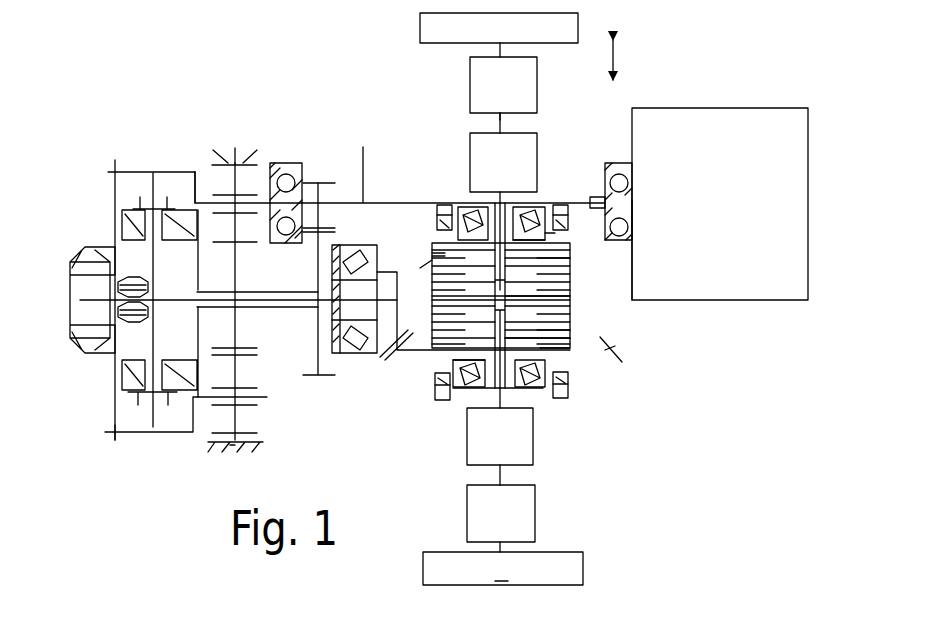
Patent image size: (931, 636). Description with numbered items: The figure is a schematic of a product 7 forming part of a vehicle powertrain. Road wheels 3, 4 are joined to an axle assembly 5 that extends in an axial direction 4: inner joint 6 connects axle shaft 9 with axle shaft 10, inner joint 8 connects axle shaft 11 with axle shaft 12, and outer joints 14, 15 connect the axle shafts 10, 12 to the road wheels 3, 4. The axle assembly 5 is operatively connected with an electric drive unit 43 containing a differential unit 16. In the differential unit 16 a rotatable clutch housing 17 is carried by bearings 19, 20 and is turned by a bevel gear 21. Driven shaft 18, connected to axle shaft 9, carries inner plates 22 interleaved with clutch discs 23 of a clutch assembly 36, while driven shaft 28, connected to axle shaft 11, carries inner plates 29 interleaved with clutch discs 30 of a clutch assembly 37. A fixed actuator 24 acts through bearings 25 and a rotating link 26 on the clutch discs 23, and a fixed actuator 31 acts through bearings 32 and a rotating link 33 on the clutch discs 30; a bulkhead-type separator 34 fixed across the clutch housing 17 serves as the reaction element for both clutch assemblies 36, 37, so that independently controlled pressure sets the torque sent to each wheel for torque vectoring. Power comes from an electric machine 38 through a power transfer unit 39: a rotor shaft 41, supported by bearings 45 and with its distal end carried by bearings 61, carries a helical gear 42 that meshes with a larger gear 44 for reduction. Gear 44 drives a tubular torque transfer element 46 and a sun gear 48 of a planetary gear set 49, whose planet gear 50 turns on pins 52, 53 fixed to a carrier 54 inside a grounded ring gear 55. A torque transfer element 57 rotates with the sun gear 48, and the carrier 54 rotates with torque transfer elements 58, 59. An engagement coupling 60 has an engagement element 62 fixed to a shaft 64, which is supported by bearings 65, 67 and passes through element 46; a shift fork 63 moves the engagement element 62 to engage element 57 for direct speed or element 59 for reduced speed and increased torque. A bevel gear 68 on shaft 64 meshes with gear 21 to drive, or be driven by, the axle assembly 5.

The road wheel 3 is at (506, 39).
The road wheel 4 is at (618, 58).
The axle assembly 5 is at (530, 126).
The inner joint 6 is at (507, 173).
The product 7 is at (612, 428).
The inner joint 8 is at (506, 447).
The axle shaft 9 is at (497, 200).
The axle shaft 10 is at (500, 125).
The axle shaft 11 is at (503, 400).
The axle shaft 12 is at (502, 473).
The outer joint 14 is at (516, 95).
The outer joint 15 is at (514, 525).
The differential unit 16 is at (625, 318).
The clutch housing 17 is at (575, 306).
The driven shaft 18 is at (572, 292).
The bearing 19 is at (540, 207).
The bearing 20 is at (532, 397).
The gear 21 is at (600, 340).
The inner plates 22 is at (420, 270).
The clutch discs 23 is at (445, 255).
The actuator 24 is at (443, 205).
The bearings 25 is at (565, 232).
The rotating link 26 is at (627, 274).
The driven shaft 28 is at (435, 355).
The inner plates 29 is at (385, 352).
The clutch discs 30 is at (415, 345).
The actuator 31 is at (445, 402).
The bearings 32 is at (570, 385).
The rotating link 33 is at (570, 360).
The separator 34 is at (575, 328).
The clutch assembly 36 is at (634, 270).
The clutch assembly 37 is at (595, 337).
The electric machine 38 is at (732, 211).
The power transfer unit 39 is at (185, 440).
The shaft 41 is at (600, 197).
The gear 42 is at (322, 183).
The electric drive unit 43 is at (348, 402).
The gear 44 is at (320, 376).
The bearings 45 is at (622, 183).
The torque transfer element 46 is at (275, 307).
The gear 48 is at (237, 321).
The gear set 49 is at (235, 160).
The gear 50 is at (243, 183).
The pin 52 is at (205, 203).
The pin 53 is at (260, 400).
The carrier 54 is at (200, 203).
The gear 55 is at (212, 442).
The torque transfer element 57 is at (172, 255).
The torque transfer element 58 is at (138, 172).
The torque transfer element 59 is at (112, 195).
The engagement coupling 60 is at (122, 402).
The bearings 61 is at (302, 162).
The engagement element 62 is at (120, 368).
The shift fork 63 is at (150, 425).
The shaft 64 is at (307, 293).
The bearing 65 is at (105, 245).
The bearing 67 is at (363, 150).
The gear 68 is at (385, 288).